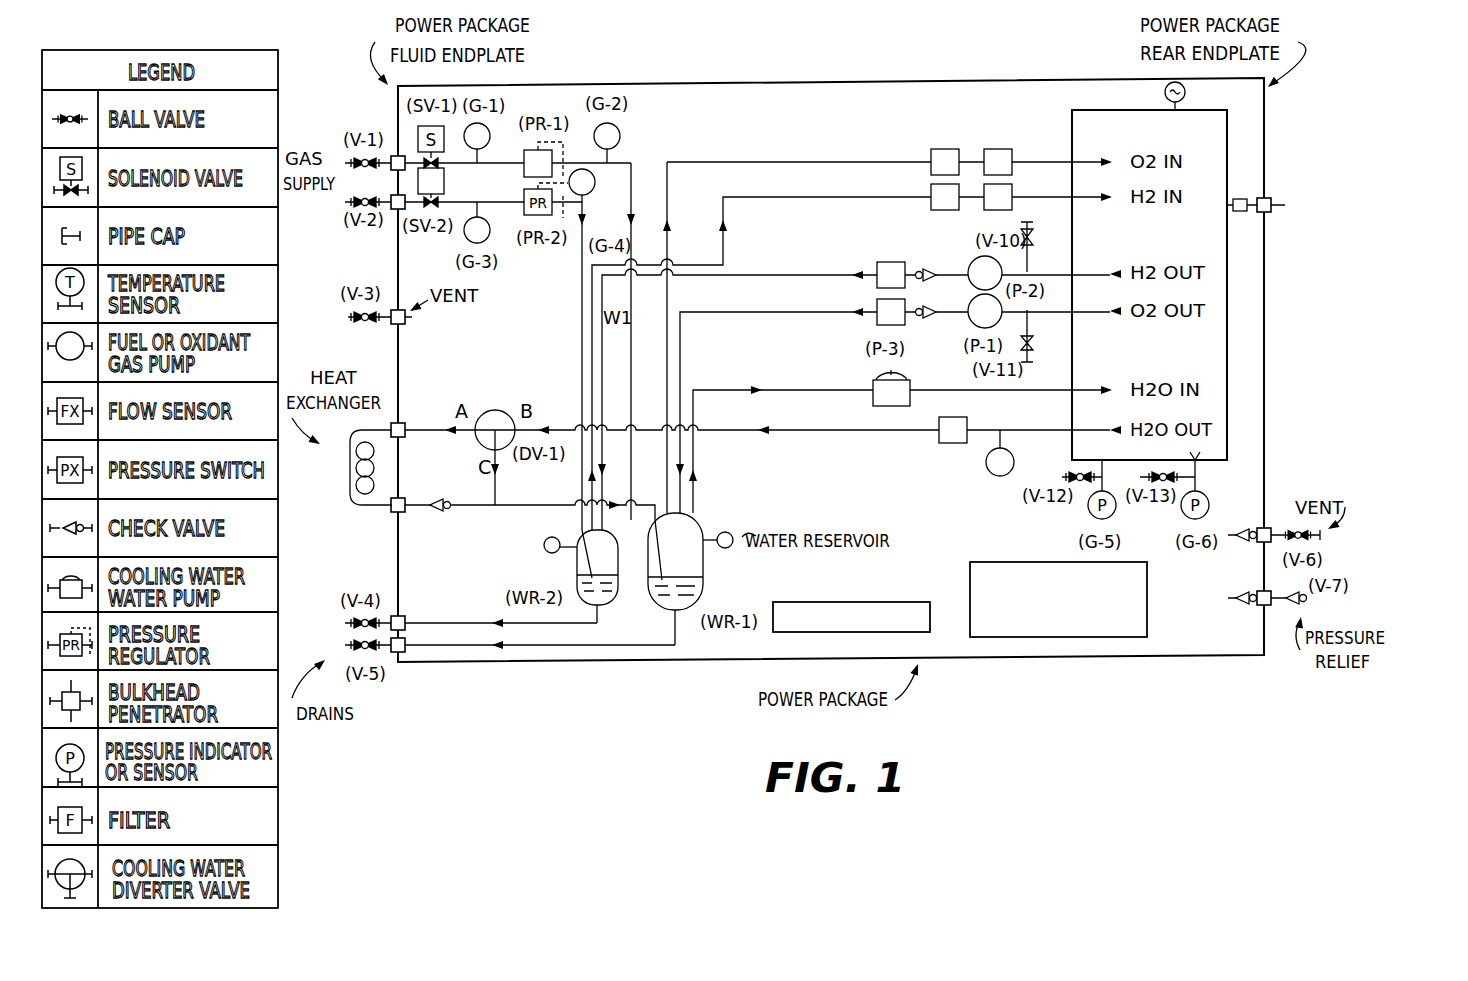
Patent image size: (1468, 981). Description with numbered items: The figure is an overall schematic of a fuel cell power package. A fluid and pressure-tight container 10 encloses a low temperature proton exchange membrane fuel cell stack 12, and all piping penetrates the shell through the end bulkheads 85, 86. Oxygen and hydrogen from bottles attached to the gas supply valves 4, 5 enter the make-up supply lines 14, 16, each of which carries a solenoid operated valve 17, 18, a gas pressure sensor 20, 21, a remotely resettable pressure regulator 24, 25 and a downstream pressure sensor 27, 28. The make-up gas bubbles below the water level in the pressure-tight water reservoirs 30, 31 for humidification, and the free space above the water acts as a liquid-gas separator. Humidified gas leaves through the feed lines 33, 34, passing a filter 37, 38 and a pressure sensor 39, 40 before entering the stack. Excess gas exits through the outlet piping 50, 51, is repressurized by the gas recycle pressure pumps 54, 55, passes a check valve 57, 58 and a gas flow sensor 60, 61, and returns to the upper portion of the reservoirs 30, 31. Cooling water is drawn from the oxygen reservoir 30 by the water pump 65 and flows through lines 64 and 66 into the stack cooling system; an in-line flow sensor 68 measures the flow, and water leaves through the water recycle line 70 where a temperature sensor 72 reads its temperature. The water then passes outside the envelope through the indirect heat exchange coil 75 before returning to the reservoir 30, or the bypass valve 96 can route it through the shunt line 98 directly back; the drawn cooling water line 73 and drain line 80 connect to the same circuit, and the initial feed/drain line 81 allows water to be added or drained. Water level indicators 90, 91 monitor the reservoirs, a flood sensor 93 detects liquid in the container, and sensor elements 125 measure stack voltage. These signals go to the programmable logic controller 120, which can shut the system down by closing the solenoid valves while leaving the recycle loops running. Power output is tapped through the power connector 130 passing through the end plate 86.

The gas supply valve 4 is at (482, 163).
The gas supply valve 5 is at (442, 202).
The container 10 is at (661, 78).
The fuel cell stack 12 is at (1077, 112).
The oxygen gas make-up supply line 14 is at (633, 160).
The hydrogen gas make-up supply line 16 is at (518, 208).
The solenoid operated valve 17 is at (446, 169).
The solenoid operated valve 18 is at (468, 199).
The gas pressure sensor 20 is at (487, 126).
The gas pressure sensor 21 is at (465, 240).
The pressure regulator 24 is at (565, 138).
The pressure regulator 25 is at (588, 233).
The gas pressure sensor 27 is at (619, 131).
The gas pressure sensor 28 is at (596, 184).
The oxygen water reservoir 30 is at (699, 520).
The hydrogen water reservoir 31 is at (577, 584).
The gas feed line 33 is at (750, 162).
The gas feed line 34 is at (596, 354).
The filter 37 is at (931, 152).
The filter 38 is at (931, 208).
The pressure sensor 39 is at (1010, 150).
The pressure sensor 40 is at (1010, 190).
The outlet piping 50 is at (680, 354).
The outlet piping 51 is at (742, 275).
The gas recycle pressure pump 54 is at (970, 327).
The gas recycle pressure pump 55 is at (971, 256).
The check valve 57 is at (926, 307).
The check valve 58 is at (922, 270).
The gas flow sensor 60 is at (877, 321).
The gas flow sensor 61 is at (877, 264).
The cooling water line 64 is at (726, 390).
The water pump 65 is at (873, 378).
The cooling water line 66 is at (1017, 392).
The in-line flow sensor 68 is at (967, 420).
The water recycle line 70 is at (1031, 432).
The temperature sensor 72 is at (985, 463).
The cooling water line 73 is at (406, 429).
The indirect heat exchange coil 75 is at (351, 504).
The drain line 80 is at (523, 648).
The initial feed/drain line 81 is at (425, 623).
The end bulkhead 85 is at (396, 263).
The end bulkhead 86 is at (1264, 253).
The water level indicator 90 is at (722, 549).
The water level indicator 91 is at (544, 546).
The flood sensor 93 is at (905, 600).
The bypass valve 96 is at (493, 410).
The shunt line 98 is at (496, 491).
The programmable logic controller 120 is at (998, 562).
The sensor element 125 is at (1185, 92).
The power connector 130 is at (1240, 198).